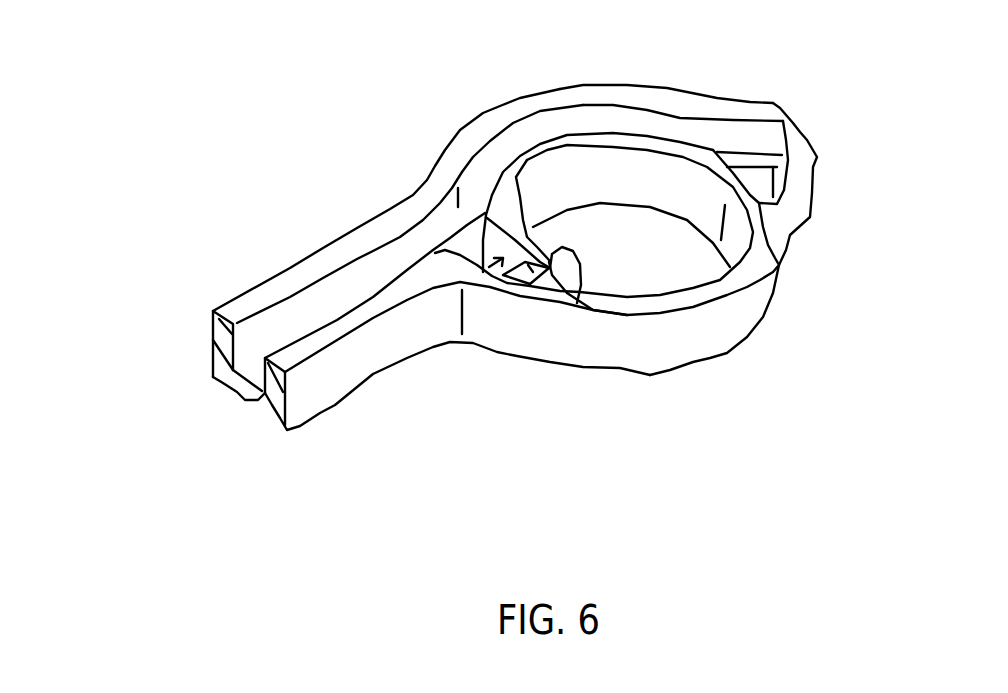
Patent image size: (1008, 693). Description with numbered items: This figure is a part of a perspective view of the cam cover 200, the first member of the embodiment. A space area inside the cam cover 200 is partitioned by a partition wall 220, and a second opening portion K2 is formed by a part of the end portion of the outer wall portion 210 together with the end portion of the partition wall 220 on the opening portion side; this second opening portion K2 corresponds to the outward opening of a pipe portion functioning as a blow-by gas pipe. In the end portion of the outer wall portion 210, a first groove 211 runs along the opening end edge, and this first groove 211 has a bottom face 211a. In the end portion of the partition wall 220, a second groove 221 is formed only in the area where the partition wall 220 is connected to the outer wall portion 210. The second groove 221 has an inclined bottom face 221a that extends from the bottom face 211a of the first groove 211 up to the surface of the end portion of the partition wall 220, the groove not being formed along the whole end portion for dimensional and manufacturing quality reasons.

The cam cover 200 is at (325, 200).
The outer wall portion 210 is at (340, 382).
The first groove 211 is at (250, 345).
The bottom face of the first groove 211a is at (475, 242).
The partition wall 220 is at (690, 340).
The second groove 221 is at (480, 280).
The inclined bottom face 221a is at (577, 303).
The second opening portion K2 is at (585, 180).